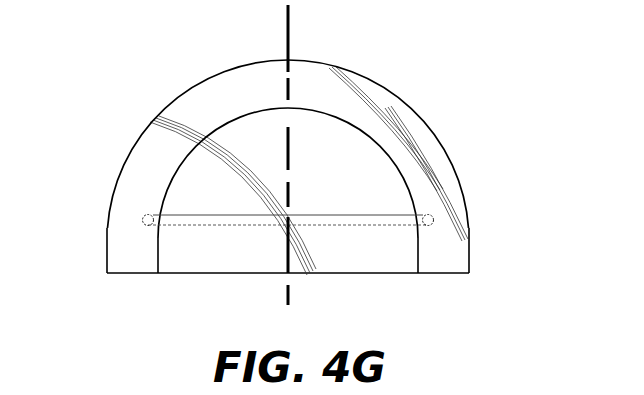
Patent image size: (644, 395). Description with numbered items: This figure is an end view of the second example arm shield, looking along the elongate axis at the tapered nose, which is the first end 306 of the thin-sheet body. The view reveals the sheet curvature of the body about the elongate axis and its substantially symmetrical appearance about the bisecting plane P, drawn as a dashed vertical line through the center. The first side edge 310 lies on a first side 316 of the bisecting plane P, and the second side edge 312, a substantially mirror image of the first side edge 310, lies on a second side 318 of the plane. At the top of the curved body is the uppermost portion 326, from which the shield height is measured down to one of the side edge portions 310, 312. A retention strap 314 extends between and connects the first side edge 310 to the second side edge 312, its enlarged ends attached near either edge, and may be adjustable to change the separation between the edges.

The first end 306 is at (369, 155).
The first side edge 310 is at (108, 273).
The second side edge 312 is at (468, 273).
The retention strap 314 is at (313, 218).
The first side 316 is at (134, 81).
The second side 318 is at (514, 76).
The uppermost portion 326 is at (289, 59).